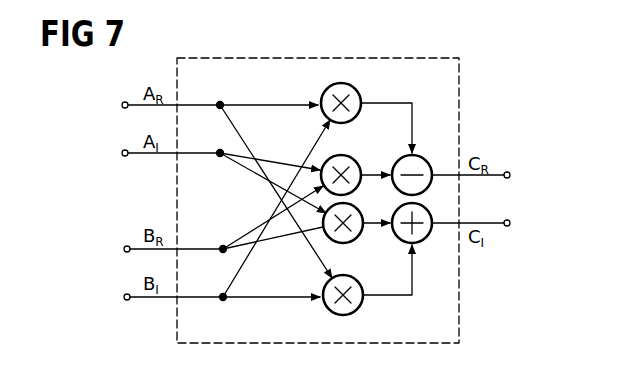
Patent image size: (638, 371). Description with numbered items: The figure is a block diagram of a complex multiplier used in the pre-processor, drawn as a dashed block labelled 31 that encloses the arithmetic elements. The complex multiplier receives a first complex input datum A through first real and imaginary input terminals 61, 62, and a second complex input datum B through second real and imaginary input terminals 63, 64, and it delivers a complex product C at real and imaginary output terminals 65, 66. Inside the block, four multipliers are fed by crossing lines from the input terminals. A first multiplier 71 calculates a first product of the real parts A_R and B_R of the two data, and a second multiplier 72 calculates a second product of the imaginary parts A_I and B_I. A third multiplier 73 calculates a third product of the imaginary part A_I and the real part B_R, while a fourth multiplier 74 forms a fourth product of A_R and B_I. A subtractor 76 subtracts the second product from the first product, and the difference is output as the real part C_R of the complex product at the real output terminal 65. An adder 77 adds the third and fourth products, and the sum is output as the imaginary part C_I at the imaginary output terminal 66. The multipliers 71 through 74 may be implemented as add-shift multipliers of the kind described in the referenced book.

The complex multiplier 31 is at (395, 58).
The first real input terminal 61 is at (122, 104).
The first imaginary input terminal 62 is at (122, 152).
The second real input terminal 63 is at (124, 248).
The second imaginary input terminal 64 is at (124, 296).
The real output terminal 65 is at (509, 172).
The imaginary output terminal 66 is at (509, 226).
The first multiplier 71 is at (322, 90).
The second multiplier 72 is at (349, 160).
The third multiplier 73 is at (356, 240).
The fourth multiplier 74 is at (356, 312).
The subtractor 76 is at (416, 162).
The adder 77 is at (425, 240).